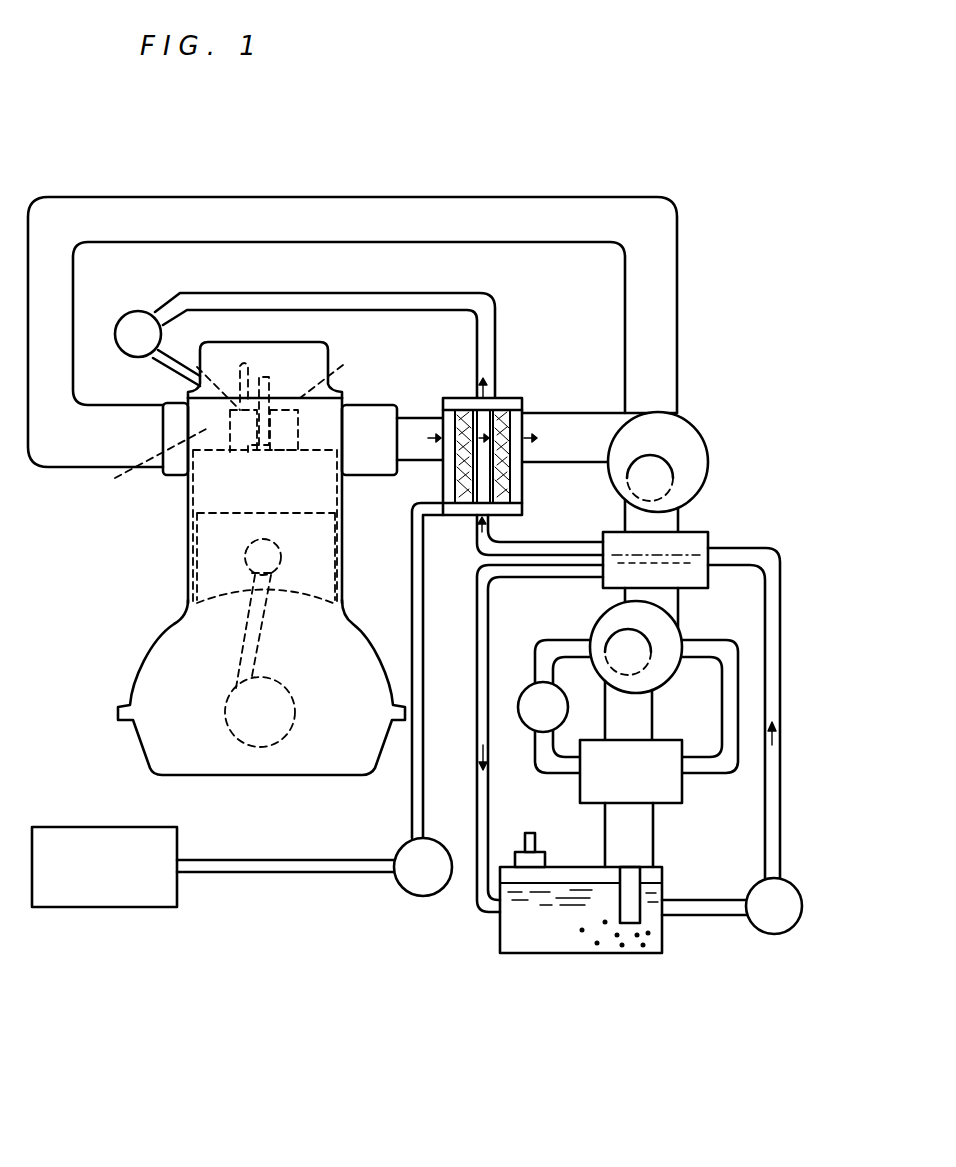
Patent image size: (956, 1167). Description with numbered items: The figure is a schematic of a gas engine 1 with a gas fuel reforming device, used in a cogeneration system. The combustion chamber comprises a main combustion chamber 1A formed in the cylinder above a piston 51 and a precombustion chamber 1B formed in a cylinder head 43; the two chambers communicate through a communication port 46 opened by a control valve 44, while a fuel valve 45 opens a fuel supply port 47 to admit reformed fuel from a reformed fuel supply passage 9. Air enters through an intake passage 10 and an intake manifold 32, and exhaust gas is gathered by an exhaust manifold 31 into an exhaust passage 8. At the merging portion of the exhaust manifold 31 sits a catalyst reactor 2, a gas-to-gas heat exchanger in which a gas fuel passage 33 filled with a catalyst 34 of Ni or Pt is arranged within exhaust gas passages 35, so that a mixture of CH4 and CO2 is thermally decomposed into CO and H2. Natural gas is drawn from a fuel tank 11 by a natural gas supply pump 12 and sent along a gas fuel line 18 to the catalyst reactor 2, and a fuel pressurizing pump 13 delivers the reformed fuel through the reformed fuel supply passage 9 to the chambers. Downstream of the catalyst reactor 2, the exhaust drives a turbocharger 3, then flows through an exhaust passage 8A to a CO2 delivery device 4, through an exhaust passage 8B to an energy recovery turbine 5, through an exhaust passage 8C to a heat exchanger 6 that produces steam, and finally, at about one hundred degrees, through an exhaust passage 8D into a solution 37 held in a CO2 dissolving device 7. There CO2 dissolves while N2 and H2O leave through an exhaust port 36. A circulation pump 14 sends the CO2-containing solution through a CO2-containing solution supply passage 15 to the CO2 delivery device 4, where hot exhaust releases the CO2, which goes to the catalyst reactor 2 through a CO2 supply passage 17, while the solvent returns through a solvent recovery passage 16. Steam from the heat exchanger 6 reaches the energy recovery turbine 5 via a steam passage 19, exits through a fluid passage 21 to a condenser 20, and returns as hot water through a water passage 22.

The gas engine 1 is at (244, 544).
The main combustion chamber 1A is at (243, 501).
The precombustion chamber 1B is at (318, 382).
The catalyst reactor 2 is at (476, 443).
The turbocharger 3 is at (684, 440).
The CO2 delivery device 4 is at (700, 548).
The energy recovery turbine 5 is at (606, 628).
The heat exchanger 6 is at (670, 785).
The CO2 dissolving device 7 is at (568, 940).
The exhaust passage 8 is at (408, 430).
The exhaust passage 8A is at (668, 530).
The exhaust passage 8B is at (680, 605).
The exhaust passage 8C is at (645, 716).
The exhaust passage 8D is at (655, 850).
The reformed fuel supply passage 9 is at (412, 300).
The intake passage 10 is at (598, 215).
The fuel tank 11 is at (95, 900).
The natural gas supply pump 12 is at (418, 898).
The fuel pressurizing pump 13 is at (133, 328).
The circulation pump 14 is at (773, 920).
The CO2-containing solution supply passage 15 is at (774, 656).
The solvent recovery passage 16 is at (477, 688).
The CO2 supply passage 17 is at (558, 548).
The fuel passage 18 is at (418, 796).
The steam passage 19 is at (727, 753).
The condenser 20 is at (538, 702).
The fluid passage 21 is at (552, 650).
The water passage 22 is at (548, 757).
The exhaust manifold 31 is at (364, 466).
The intake manifold 32 is at (172, 460).
The gas fuel passage 33 is at (468, 487).
The catalyst 34 is at (500, 430).
The exhaust gas passages 35 is at (480, 423).
The exhaust port 36 is at (540, 850).
The solution 37 is at (520, 948).
The cylinder head 43 is at (145, 466).
The control valve 44 is at (276, 446).
The fuel valve 45 is at (245, 402).
The communication port 46 is at (278, 455).
The fuel supply port 47 is at (244, 445).
The piston 51 is at (316, 566).